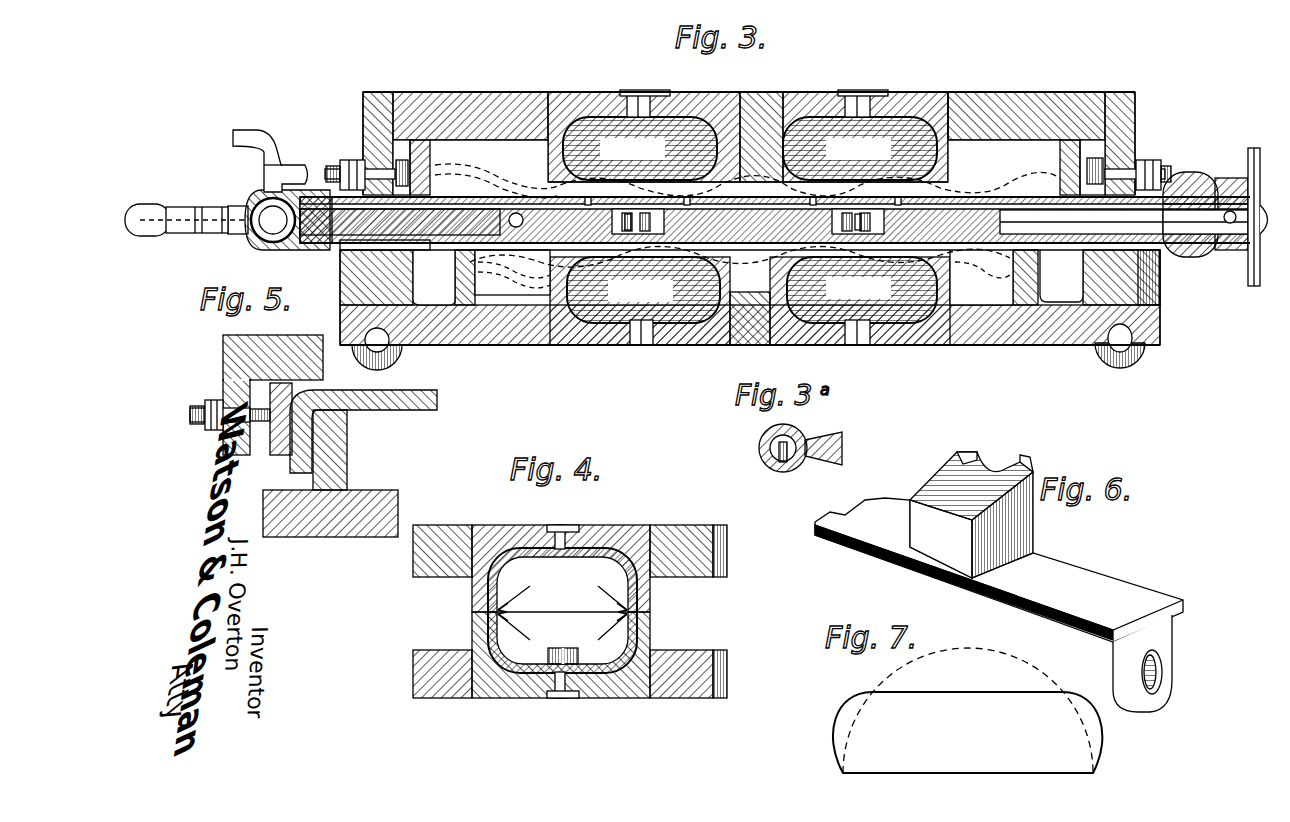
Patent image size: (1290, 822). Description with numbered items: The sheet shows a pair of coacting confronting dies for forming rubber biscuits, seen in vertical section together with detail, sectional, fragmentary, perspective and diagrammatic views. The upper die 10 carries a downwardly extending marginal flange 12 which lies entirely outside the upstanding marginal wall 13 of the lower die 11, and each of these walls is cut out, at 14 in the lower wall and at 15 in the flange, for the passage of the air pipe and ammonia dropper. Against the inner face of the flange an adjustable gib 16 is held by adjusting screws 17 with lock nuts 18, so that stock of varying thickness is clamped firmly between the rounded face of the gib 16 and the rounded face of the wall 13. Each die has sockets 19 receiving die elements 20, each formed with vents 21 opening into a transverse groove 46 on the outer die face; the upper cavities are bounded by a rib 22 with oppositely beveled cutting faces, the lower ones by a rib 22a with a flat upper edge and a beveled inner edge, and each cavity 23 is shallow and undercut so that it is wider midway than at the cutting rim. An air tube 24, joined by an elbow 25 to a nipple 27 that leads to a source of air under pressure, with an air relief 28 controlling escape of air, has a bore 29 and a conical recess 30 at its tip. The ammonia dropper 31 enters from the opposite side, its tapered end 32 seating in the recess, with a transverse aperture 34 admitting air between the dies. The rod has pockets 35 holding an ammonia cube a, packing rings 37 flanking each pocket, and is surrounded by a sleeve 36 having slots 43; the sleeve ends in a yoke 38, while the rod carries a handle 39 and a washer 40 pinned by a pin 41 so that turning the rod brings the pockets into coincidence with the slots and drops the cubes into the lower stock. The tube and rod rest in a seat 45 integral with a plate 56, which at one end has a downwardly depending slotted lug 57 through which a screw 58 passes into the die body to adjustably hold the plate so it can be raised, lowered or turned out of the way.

In FIG. 3, the die 10 is at (1010, 128).
In FIG. 5, the die 10 is at (245, 355).
In FIG. 4, the die 10 is at (680, 525).
In FIG. 3, the die 11 is at (1000, 330).
In FIG. 5, the die 11 is at (398, 492).
In FIG. 4, the die 11 is at (668, 698).
In FIG. 3, the marginal flange 12 is at (398, 150).
In FIG. 5, the marginal flange 12 is at (238, 455).
In FIG. 3, the marginal wall 13 is at (713, 277).
In FIG. 5, the marginal wall 13 is at (348, 447).
In FIG. 3, the cut out 14 is at (742, 272).
In FIG. 3, the cut out 15 is at (364, 176).
In FIG. 3, the adjustable gib 16 is at (422, 150).
In FIG. 5, the adjustable gib 16 is at (283, 455).
In FIG. 3, the adjusting screw 17 is at (399, 100).
In FIG. 5, the adjusting screw 17 is at (195, 412).
In FIG. 3, the lock nut 18 is at (343, 168).
In FIG. 3, the socket 19 is at (530, 105).
In FIG. 3, the die element 20 is at (588, 103).
In FIG. 4, the die element 20 is at (493, 528).
In FIG. 3, the vent 21 is at (640, 92).
In FIG. 4, the vent 21 is at (562, 530).
In FIG. 3, the projecting rib 22 is at (548, 160).
In FIG. 4, the projecting rib 22 is at (475, 590).
In FIG. 3, the rib 22a is at (728, 290).
In FIG. 4, the rib 22a is at (475, 630).
In FIG. 3, the cavity 23 is at (750, 220).
In FIG. 3, the air tube 24 is at (292, 250).
In FIG. 3, the elbow 25 is at (240, 234).
In FIG. 3, the nipple 27 is at (152, 212).
In FIG. 3, the air relief 28 is at (262, 176).
In FIG. 3a, the air relief 28 is at (760, 452).
In FIG. 3, the bore 29 is at (268, 236).
In FIG. 3, the conical recess 30 is at (440, 205).
In FIG. 3, the ammonia dropper 31 is at (748, 200).
In FIG. 3, the tapered end 32 is at (512, 212).
In FIG. 3, the transverse aperture 34 is at (589, 197).
In FIG. 3, the pocket 35 is at (648, 234).
In FIG. 3, the sleeve 36 is at (990, 92).
In FIG. 3, the packing ring 37 is at (897, 197).
In FIG. 3, the yoke 38 is at (1195, 257).
In FIG. 3, the handle 39 is at (1254, 148).
In FIG. 3, the washer 40 is at (1232, 178).
In FIG. 3, the pin 41 is at (1230, 223).
In FIG. 3, the slot 43 is at (885, 234).
In FIG. 3, the seat 45 is at (335, 282).
In FIG. 6, the seat 45 is at (1012, 520).
In FIG. 3, the groove 46 is at (660, 100).
In FIG. 4, the groove 46 is at (585, 535).
In FIG. 3, the plate 56 is at (1158, 290).
In FIG. 6, the plate 56 is at (1090, 584).
In FIG. 3, the lug 57 is at (400, 362).
In FIG. 6, the lug 57 is at (1168, 658).
In FIG. 3, the screw 58 is at (395, 352).
In FIG. 3, the ammonia cube a is at (630, 232).
In FIG. 4, the ammonia cube a is at (566, 648).